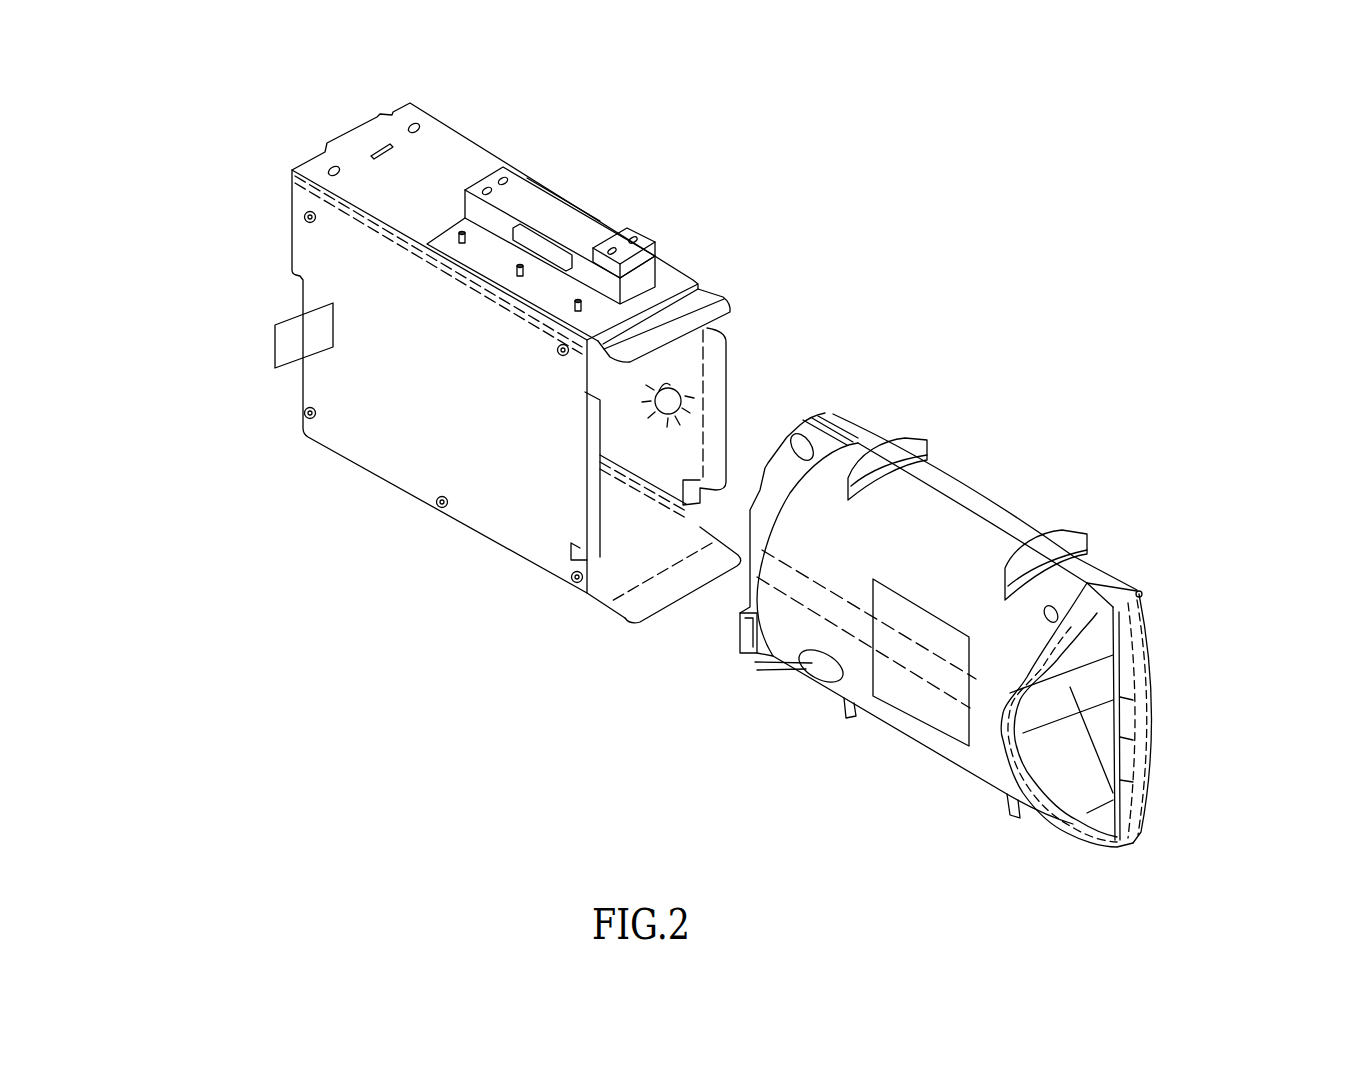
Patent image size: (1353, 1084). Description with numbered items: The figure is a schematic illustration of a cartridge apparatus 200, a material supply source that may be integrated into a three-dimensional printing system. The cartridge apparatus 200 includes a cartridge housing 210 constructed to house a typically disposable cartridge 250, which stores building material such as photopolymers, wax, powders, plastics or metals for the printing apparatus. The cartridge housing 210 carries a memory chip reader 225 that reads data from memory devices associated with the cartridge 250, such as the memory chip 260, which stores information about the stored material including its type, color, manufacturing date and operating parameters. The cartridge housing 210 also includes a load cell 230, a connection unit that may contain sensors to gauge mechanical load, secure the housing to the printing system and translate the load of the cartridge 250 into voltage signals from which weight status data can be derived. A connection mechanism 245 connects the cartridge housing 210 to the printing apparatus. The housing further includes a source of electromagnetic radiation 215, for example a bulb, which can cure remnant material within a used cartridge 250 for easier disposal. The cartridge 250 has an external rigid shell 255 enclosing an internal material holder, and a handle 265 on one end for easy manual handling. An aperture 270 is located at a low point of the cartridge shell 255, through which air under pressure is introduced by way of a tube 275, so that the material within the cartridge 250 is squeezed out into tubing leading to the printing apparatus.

The cartridge apparatus 200 is at (936, 185).
The cartridge housing 210 is at (400, 430).
The source of electromagnetic radiation 215 is at (670, 387).
The memory chip reader 225 is at (275, 342).
The load cell 230 is at (480, 176).
The connection mechanism 245 is at (620, 246).
The cartridge 250 is at (925, 415).
The cartridge shell 255 is at (1012, 491).
The memory chip 260 is at (796, 433).
The handle 265 is at (1127, 717).
The aperture 270 is at (818, 670).
The tube 275 is at (757, 665).